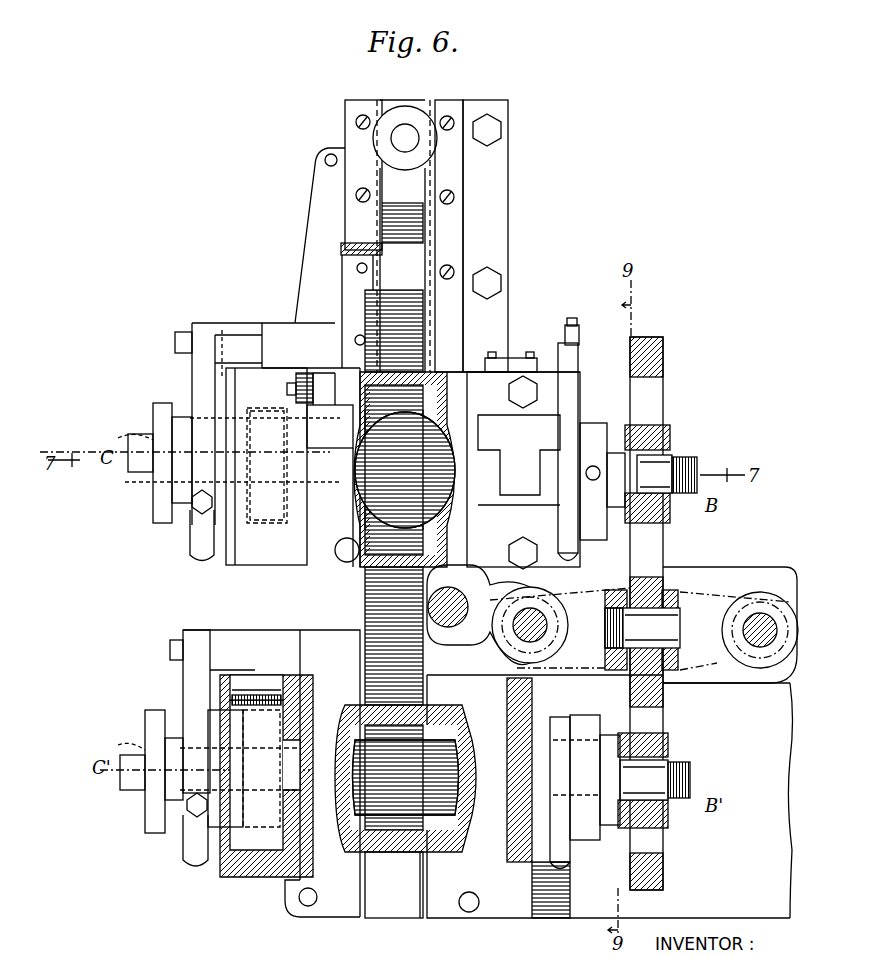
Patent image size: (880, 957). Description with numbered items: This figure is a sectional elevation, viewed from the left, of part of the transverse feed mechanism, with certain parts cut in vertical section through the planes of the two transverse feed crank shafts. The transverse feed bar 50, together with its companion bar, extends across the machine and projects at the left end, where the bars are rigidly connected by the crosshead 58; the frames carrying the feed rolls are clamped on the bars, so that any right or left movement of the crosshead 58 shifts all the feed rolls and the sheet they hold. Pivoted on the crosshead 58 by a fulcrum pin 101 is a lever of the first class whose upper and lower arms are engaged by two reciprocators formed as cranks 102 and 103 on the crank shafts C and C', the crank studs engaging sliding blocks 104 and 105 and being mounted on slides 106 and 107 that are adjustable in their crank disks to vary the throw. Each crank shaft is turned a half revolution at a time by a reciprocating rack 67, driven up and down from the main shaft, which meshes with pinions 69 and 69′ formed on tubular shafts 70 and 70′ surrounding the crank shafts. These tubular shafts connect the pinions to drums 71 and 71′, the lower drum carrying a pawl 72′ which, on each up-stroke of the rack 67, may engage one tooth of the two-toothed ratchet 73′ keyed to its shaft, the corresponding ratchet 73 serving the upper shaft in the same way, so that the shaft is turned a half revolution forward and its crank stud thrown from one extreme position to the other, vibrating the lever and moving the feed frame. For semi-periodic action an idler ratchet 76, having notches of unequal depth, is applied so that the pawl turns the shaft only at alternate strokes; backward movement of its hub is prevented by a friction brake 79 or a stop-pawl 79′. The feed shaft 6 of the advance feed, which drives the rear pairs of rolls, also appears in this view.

The feed shaft 6 is at (448, 627).
The transverse feed bar 50 is at (548, 622).
The crosshead 58 is at (710, 685).
The reciprocating rack 67 is at (365, 603).
The pinion 69 is at (372, 500).
The pinion 69′ is at (390, 835).
The tubular shaft 70 is at (405, 470).
The tubular shaft 70′ is at (406, 777).
The drum 71 is at (272, 565).
The drum 71′ is at (262, 880).
The pawl 72′ is at (273, 690).
The two-toothed ratchet 73 is at (267, 465).
The two-toothed ratchet 73′ is at (240, 768).
The idler ratchet 76 is at (225, 768).
The friction brake 79 is at (172, 862).
The stop-pawl 79′ is at (222, 378).
The fulcrum pin 101 is at (680, 620).
The crank 102 is at (678, 457).
The crank 103 is at (668, 764).
The sliding block 104 is at (660, 432).
The sliding block 105 is at (652, 830).
The slide 106 is at (591, 439).
The slide 107 is at (587, 840).